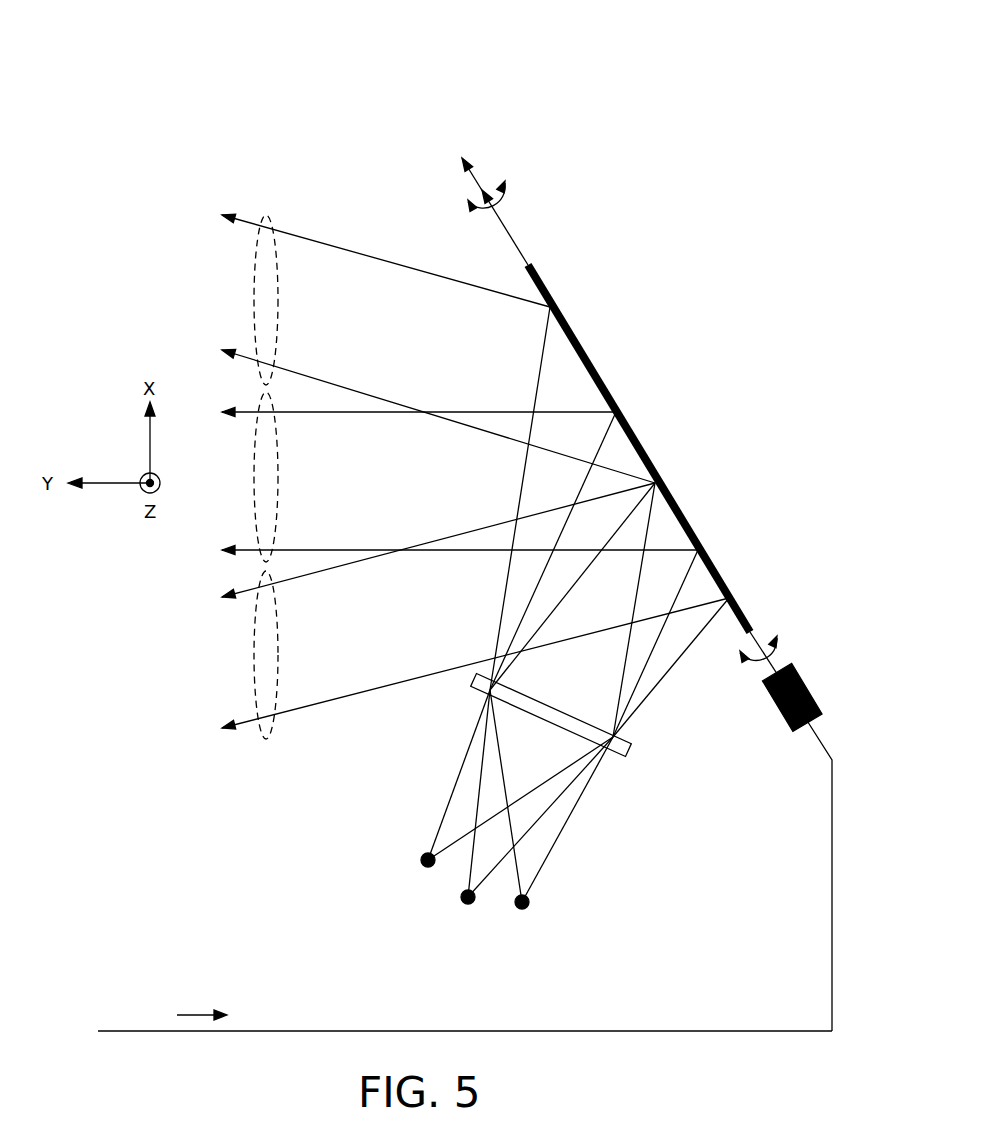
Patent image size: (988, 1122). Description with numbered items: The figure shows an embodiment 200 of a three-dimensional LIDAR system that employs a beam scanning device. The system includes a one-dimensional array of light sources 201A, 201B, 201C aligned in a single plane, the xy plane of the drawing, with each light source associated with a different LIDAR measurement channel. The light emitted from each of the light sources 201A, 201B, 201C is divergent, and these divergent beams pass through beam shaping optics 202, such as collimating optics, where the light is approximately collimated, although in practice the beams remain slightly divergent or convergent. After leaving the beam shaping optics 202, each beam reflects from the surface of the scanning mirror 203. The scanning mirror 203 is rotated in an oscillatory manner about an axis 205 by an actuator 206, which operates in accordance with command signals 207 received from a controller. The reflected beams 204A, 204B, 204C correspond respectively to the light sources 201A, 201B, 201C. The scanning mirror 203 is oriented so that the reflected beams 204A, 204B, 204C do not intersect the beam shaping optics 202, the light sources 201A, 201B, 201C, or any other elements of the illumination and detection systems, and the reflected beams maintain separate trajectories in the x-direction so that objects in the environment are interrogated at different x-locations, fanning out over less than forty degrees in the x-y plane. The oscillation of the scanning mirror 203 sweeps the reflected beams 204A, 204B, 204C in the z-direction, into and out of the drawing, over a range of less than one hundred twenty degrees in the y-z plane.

The embodiment of a 3-D LIDAR system 200 is at (110, 60).
The light source 201A is at (422, 865).
The light source 201B is at (462, 904).
The light source 201C is at (518, 910).
The beam shaping optics 202 is at (628, 756).
The scanning mirror 203 is at (597, 370).
The reflected beam 204A is at (254, 637).
The reflected beam 204B is at (254, 459).
The reflected beam 204C is at (254, 283).
The axis 205 is at (520, 250).
The actuator 206 is at (785, 725).
The command signals 207 is at (198, 1013).